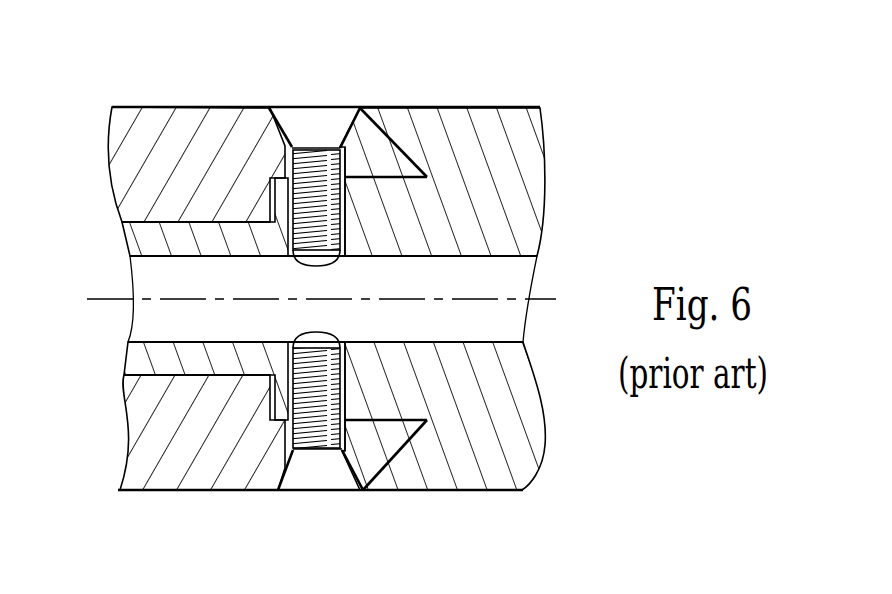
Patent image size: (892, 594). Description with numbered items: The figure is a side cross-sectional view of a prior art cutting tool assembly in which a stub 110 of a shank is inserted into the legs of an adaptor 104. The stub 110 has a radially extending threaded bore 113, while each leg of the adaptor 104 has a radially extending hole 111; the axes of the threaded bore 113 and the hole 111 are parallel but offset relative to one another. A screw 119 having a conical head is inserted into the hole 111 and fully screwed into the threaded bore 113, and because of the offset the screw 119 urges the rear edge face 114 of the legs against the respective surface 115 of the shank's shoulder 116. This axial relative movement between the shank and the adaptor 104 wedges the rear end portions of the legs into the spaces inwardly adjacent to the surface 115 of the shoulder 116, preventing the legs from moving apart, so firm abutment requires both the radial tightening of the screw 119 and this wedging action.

The adaptor 104 is at (137, 107).
The stub 110 is at (498, 226).
The hole 111 is at (300, 135).
The threaded bore 113 is at (298, 262).
The rear edge face 114 is at (403, 150).
The surface 115 is at (398, 156).
The shoulder 116 is at (398, 123).
The screw 119 is at (308, 175).